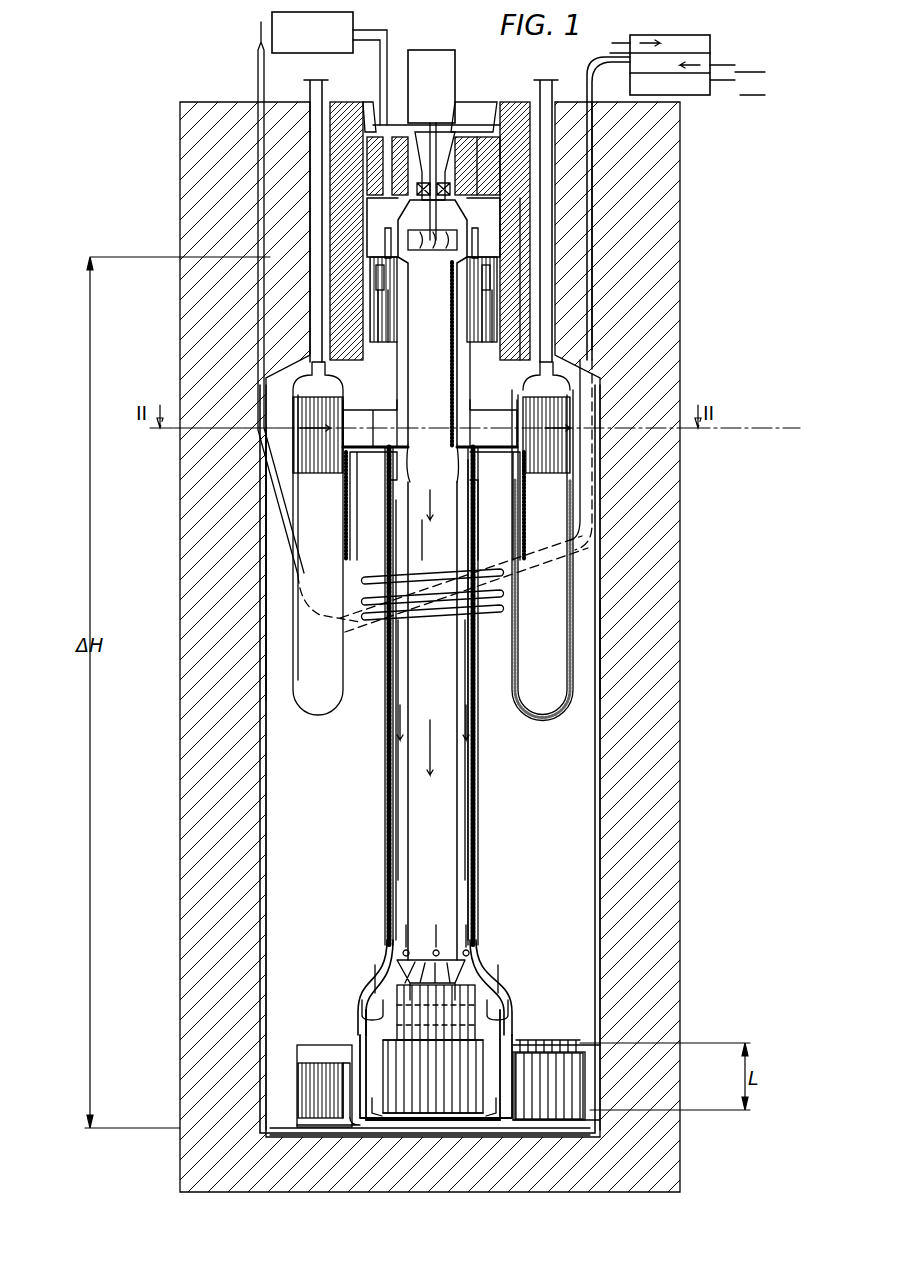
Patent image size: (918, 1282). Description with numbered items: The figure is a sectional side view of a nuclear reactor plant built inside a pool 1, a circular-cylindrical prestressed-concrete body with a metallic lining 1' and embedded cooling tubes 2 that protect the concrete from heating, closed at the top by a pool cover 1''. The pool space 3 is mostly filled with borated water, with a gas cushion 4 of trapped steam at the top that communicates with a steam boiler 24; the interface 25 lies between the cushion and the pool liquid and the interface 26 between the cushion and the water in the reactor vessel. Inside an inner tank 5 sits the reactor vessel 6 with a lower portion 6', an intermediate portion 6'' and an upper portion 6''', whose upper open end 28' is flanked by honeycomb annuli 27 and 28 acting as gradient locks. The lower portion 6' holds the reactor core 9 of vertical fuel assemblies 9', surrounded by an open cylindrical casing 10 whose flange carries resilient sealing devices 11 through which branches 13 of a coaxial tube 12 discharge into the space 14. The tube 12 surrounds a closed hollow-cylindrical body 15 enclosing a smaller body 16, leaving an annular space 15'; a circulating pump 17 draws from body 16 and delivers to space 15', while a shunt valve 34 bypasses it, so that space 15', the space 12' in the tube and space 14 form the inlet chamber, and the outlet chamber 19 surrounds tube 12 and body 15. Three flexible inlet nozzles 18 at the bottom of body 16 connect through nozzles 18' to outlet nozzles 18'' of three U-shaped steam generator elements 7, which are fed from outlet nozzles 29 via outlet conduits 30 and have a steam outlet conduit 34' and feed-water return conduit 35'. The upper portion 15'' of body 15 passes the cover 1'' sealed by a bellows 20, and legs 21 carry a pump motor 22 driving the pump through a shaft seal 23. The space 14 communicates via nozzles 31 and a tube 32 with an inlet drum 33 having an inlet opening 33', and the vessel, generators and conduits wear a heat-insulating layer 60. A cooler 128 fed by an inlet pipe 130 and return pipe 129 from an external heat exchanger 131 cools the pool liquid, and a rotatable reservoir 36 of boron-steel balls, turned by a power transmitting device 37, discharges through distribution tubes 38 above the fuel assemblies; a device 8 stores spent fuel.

The pool 1 is at (446, 647).
The metallic lining 1' is at (203, 565).
The pool cover 1'' is at (661, 226).
The cooling tubes 2 is at (610, 664).
The pool space 3 is at (295, 802).
The gas cushion 4 is at (370, 197).
The inner tank 5 is at (262, 747).
The reactor vessel 6 is at (488, 700).
The lower portion of reactor vessel 6' is at (467, 980).
The intermediate portion of reactor vessel 6'' is at (430, 590).
The upper portion of reactor vessel 6''' is at (375, 394).
The steam generator elements 7 is at (325, 697).
The device for storage of spent fuel 8 is at (565, 1063).
The reactor core 9 is at (613, 1082).
The fuel assemblies 9' is at (396, 1069).
The cylindrical casing 10 is at (483, 1032).
The sealing device 11 is at (360, 1001).
The tube 12 is at (406, 750).
The space in tube 12' is at (388, 645).
The branches 13 is at (480, 972).
The space 14 is at (375, 1035).
The hollow-cylindrical body 15 is at (490, 394).
The annular space 15' is at (437, 354).
The upper hollow-cylindrical portion 15'' is at (596, 166).
The hollow-cylindrical body 16 is at (456, 300).
The circulating pump 17 is at (395, 228).
The inlet nozzles 18 is at (435, 441).
The nozzle 18' is at (373, 506).
The outlet nozzle 18'' is at (363, 506).
The outlet chamber 19 is at (400, 816).
The bellows-shaped metallic body 20 is at (462, 128).
The legs 21 is at (395, 125).
The pump motor 22 is at (437, 55).
The shaft seal 23 is at (418, 188).
The steam boiler 24 is at (272, 30).
The interface 25 is at (380, 282).
The interface 26 is at (388, 255).
The annulus of honeycomb material 27 is at (378, 307).
The annulus of honeycomb material 28 is at (262, 316).
The upper open end 28' is at (621, 306).
The outlet nozzles 29 is at (478, 458).
The outlet conduit 30 is at (500, 460).
The nozzles 31 is at (455, 1137).
The tube 32 is at (322, 1068).
The inlet drum 33 is at (241, 1088).
The inlet opening 33' is at (246, 1103).
The shunt valve 34 is at (624, 279).
The outlet conduit for steam 34' is at (527, 218).
The return conduit for feed water 35' is at (300, 218).
The reservoir 36 is at (540, 256).
The power transmitting device 37 is at (470, 165).
The distribution tubes 38 is at (465, 512).
The heat-insulating layer 60 is at (478, 763).
The cooler 128 is at (378, 620).
The return pipe 129 is at (258, 92).
The inlet pipe 130 is at (590, 222).
The heat exchanger 131 is at (700, 92).